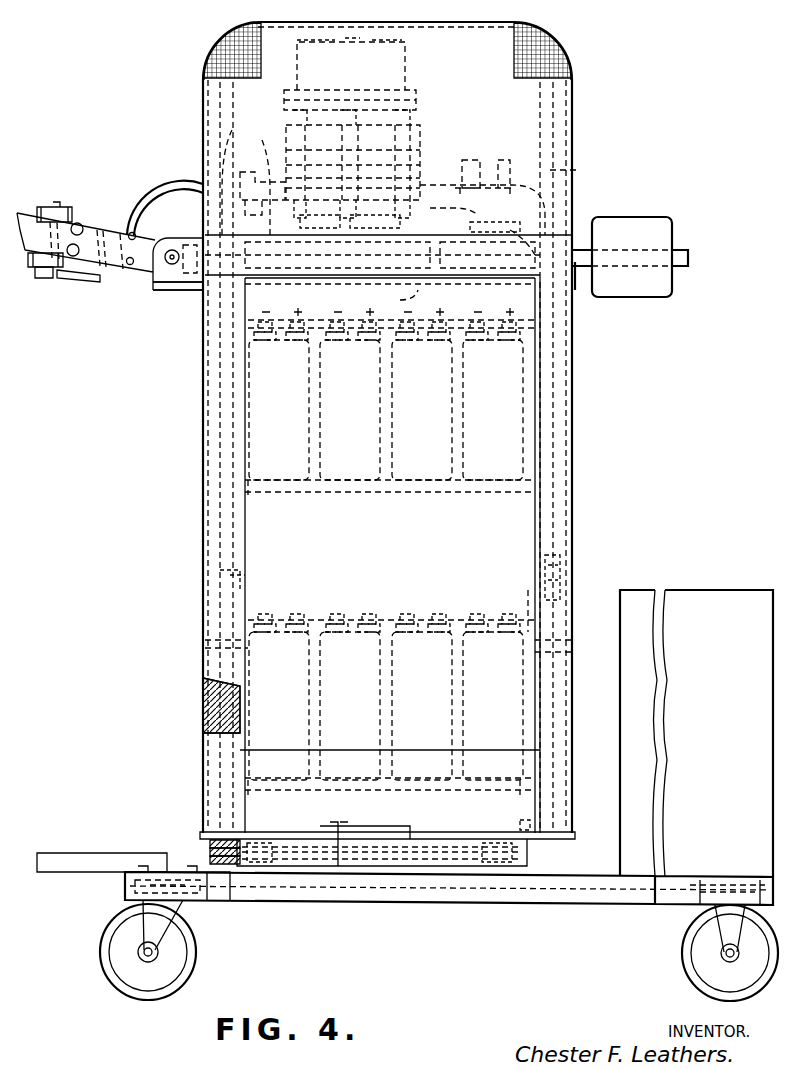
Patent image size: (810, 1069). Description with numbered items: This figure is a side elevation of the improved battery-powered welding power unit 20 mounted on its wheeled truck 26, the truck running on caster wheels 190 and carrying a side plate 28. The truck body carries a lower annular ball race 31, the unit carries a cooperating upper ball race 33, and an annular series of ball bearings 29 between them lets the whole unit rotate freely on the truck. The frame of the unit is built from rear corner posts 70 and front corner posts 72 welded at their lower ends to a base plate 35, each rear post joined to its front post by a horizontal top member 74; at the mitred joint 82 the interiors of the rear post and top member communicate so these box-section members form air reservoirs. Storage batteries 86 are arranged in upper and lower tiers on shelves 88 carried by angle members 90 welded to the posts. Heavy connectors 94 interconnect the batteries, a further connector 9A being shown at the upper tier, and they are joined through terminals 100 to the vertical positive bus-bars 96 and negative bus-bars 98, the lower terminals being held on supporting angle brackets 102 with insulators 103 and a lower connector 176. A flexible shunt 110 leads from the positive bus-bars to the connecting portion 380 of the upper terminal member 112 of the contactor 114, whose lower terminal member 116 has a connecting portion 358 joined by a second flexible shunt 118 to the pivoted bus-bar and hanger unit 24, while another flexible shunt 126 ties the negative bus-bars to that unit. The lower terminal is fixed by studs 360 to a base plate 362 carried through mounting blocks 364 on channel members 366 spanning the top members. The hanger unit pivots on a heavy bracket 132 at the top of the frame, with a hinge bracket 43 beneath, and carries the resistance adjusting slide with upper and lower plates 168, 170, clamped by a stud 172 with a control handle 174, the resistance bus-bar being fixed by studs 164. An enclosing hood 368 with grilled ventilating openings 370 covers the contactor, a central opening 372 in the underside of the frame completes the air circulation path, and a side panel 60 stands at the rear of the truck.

The power unit 20 is at (588, 431).
The bus-bar and hanger unit 24 is at (95, 228).
The truck 26 is at (569, 907).
The plate 28 is at (79, 850).
The ball bearings 29 is at (228, 866).
The lower annular ball race 31 is at (210, 858).
The upper ball race 33 is at (210, 852).
The base plate 35 is at (210, 843).
The bracket 43 is at (170, 291).
The panel 60 is at (705, 582).
The rear corner posts 70 is at (570, 552).
The front corner posts 72 is at (205, 572).
The horizontal top member 74 is at (467, 260).
The mitred joint 82 is at (548, 264).
The electric storage batteries 86 is at (362, 418).
The shelves 88 is at (425, 780).
The angle members 90 is at (520, 792).
The connectors 94 is at (462, 618).
The terminal 9A is at (310, 320).
The positive bus-bars 96 is at (570, 515).
The negative bus-bars 98 is at (205, 445).
The terminals 100 is at (520, 300).
The supporting angle brackets 102 is at (575, 652).
The insulators 103 is at (570, 605).
The flexible shunt 110 is at (600, 172).
The upper terminal member 112 is at (448, 159).
The contactor 114 is at (421, 78).
The lower terminal member 116 is at (261, 171).
The flexible shunt 118 is at (231, 172).
The flexible shunt 126 is at (205, 215).
The bracket 132 is at (180, 292).
The studs 164 is at (80, 256).
The upper plate 168 is at (45, 207).
The lower plate 170 is at (30, 270).
The stud 172 is at (46, 280).
The control handle 174 is at (92, 285).
The connector 176 is at (520, 824).
The caster wheel 190 is at (439, 940).
The connecting portion 358 is at (261, 177).
The studs 360 is at (470, 230).
The base plate 362 is at (455, 209).
The mounting blocks 364 is at (462, 250).
The channel members 366 is at (448, 282).
The enclosing hood 368 is at (573, 112).
The grilled ventilating openings 370 is at (210, 44).
The central opening 372 is at (380, 840).
The connecting portion 380 is at (485, 164).